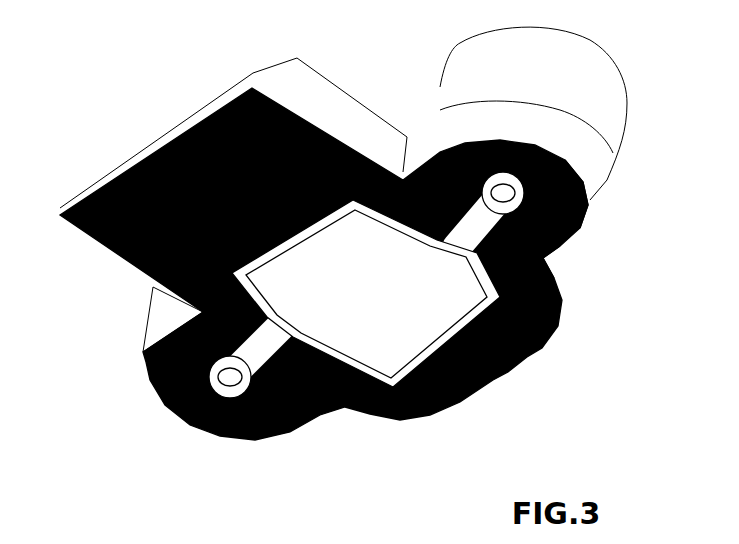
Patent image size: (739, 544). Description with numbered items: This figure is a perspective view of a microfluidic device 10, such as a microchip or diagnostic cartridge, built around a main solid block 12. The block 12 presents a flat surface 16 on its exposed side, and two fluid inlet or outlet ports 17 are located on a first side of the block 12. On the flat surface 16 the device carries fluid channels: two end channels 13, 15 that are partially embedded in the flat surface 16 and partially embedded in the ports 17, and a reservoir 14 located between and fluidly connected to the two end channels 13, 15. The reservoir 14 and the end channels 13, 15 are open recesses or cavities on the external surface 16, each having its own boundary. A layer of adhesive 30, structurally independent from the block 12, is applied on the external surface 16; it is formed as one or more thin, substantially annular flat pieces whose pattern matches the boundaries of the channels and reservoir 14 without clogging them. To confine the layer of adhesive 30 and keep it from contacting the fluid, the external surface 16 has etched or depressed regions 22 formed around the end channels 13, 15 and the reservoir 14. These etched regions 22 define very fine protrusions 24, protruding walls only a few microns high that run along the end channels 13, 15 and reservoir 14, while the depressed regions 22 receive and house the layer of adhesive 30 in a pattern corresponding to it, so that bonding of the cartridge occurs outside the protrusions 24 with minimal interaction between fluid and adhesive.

The microfluidic device 10 is at (116, 106).
The block 12 is at (370, 102).
The end channel 13 is at (237, 381).
The reservoir 14 is at (355, 296).
The end channel 15 is at (513, 198).
The flat surface 16 is at (597, 196).
The fluid inlet or outlet port 17 is at (610, 88).
The etched or depressed region 22 is at (547, 284).
The protrusion 24 is at (463, 323).
The layer of adhesive 30 is at (527, 336).